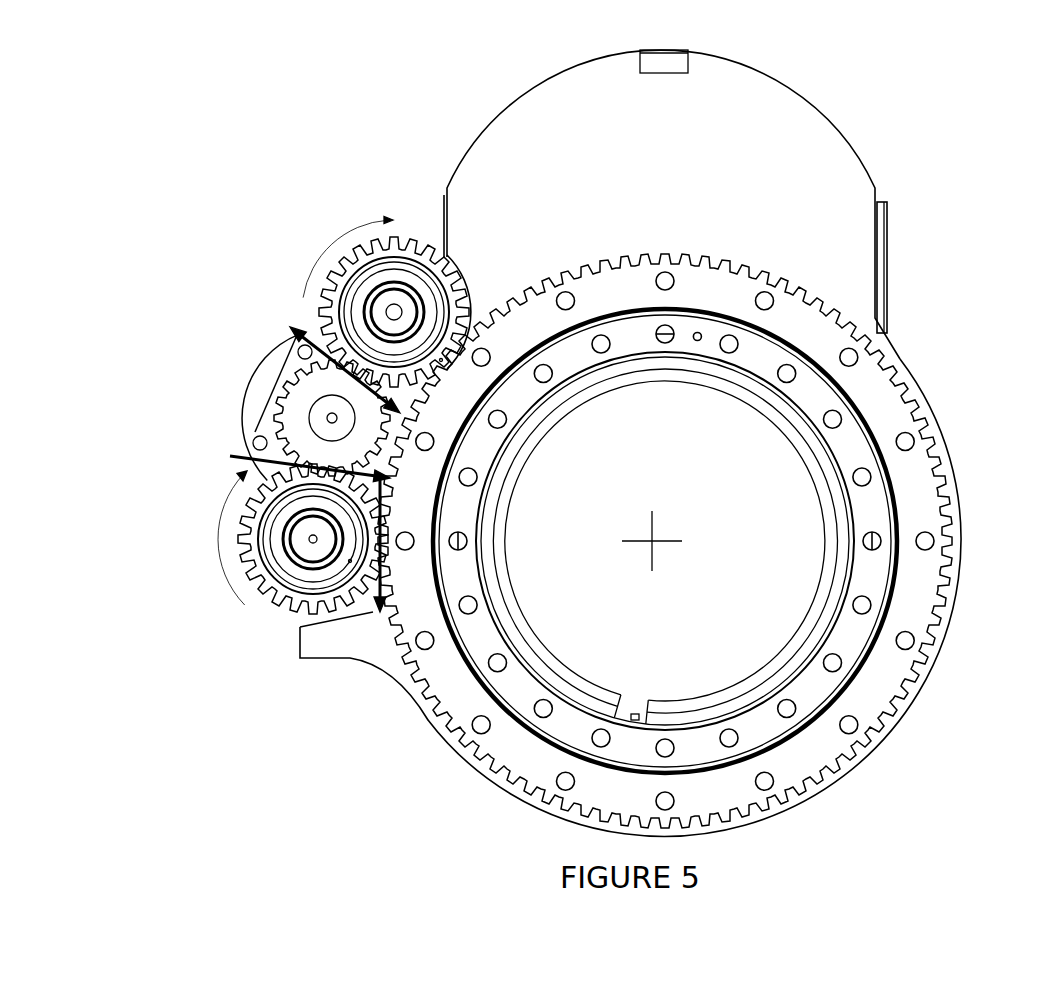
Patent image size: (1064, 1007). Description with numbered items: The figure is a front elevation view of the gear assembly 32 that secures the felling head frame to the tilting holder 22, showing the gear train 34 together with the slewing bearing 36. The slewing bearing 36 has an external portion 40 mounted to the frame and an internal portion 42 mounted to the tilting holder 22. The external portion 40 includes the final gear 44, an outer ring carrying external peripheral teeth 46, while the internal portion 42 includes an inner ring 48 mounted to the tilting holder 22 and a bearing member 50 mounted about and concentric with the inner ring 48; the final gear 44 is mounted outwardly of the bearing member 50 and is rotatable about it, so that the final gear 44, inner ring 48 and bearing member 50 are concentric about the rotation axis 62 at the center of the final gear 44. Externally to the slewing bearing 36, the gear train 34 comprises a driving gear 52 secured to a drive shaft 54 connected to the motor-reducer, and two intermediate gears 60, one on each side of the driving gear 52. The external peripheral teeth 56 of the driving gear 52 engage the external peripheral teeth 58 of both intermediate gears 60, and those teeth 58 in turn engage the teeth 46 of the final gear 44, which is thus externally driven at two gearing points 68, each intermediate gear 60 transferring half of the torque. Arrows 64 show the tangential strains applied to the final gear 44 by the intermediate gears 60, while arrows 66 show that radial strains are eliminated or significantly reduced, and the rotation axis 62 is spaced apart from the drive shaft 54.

The tilting holder 22 is at (855, 186).
The gear assembly 32 is at (292, 237).
The gear train 34 is at (214, 486).
The slewing bearing 36 is at (906, 324).
The external portion 40 is at (913, 382).
The internal portion 42 is at (855, 445).
The final gear 44 is at (920, 453).
The external peripheral teeth 46 is at (948, 487).
The inner ring 48 is at (878, 530).
The bearing member 50 is at (900, 562).
The driving gear 52 is at (310, 402).
The drive shaft 54 is at (332, 417).
The external peripheral teeth 56 is at (293, 445).
The external peripheral teeth 58 is at (330, 283).
The intermediate gears 60 is at (372, 257).
The rotation axis 62 is at (652, 541).
The arrows 64 is at (447, 257).
The arrows 66 is at (290, 328).
The gearing points 68 is at (441, 360).